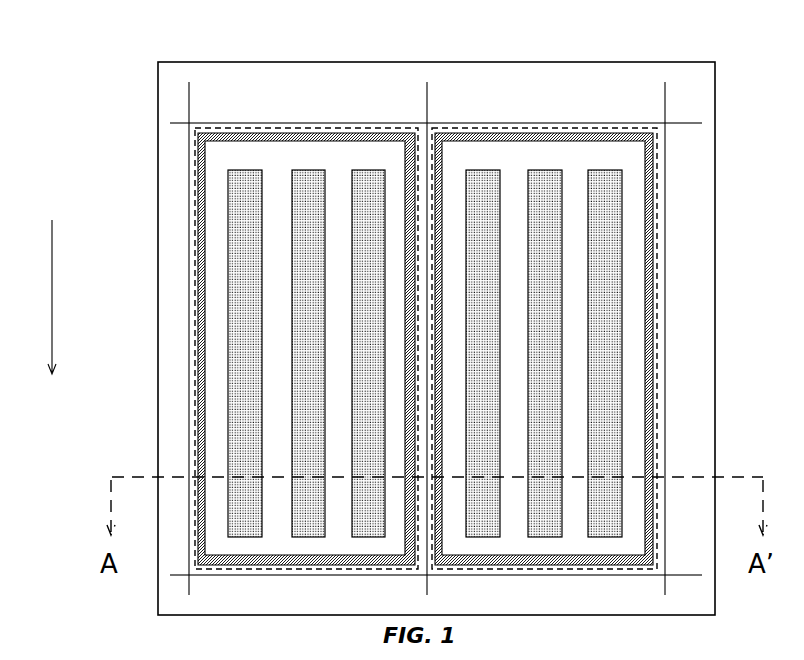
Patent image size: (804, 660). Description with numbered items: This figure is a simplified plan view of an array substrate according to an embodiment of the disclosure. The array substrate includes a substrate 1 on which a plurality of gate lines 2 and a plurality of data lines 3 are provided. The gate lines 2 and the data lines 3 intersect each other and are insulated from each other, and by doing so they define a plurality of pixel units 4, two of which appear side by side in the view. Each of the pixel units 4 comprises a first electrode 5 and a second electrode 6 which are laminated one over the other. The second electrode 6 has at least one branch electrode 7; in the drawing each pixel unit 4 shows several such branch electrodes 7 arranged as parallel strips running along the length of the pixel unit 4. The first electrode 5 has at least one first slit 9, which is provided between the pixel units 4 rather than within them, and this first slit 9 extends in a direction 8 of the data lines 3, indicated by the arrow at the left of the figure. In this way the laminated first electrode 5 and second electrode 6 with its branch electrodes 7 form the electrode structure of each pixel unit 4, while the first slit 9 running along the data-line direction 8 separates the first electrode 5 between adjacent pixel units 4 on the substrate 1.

The substrate 1 is at (635, 62).
The gate line 2 is at (525, 122).
The data line 3 is at (190, 120).
The pixel unit 4 is at (248, 128).
The first electrode 5 is at (328, 138).
The second electrode 6 is at (217, 300).
The branch electrode 7 is at (277, 438).
The direction of the data lines 8 is at (60, 297).
The first slit 9 is at (432, 127).